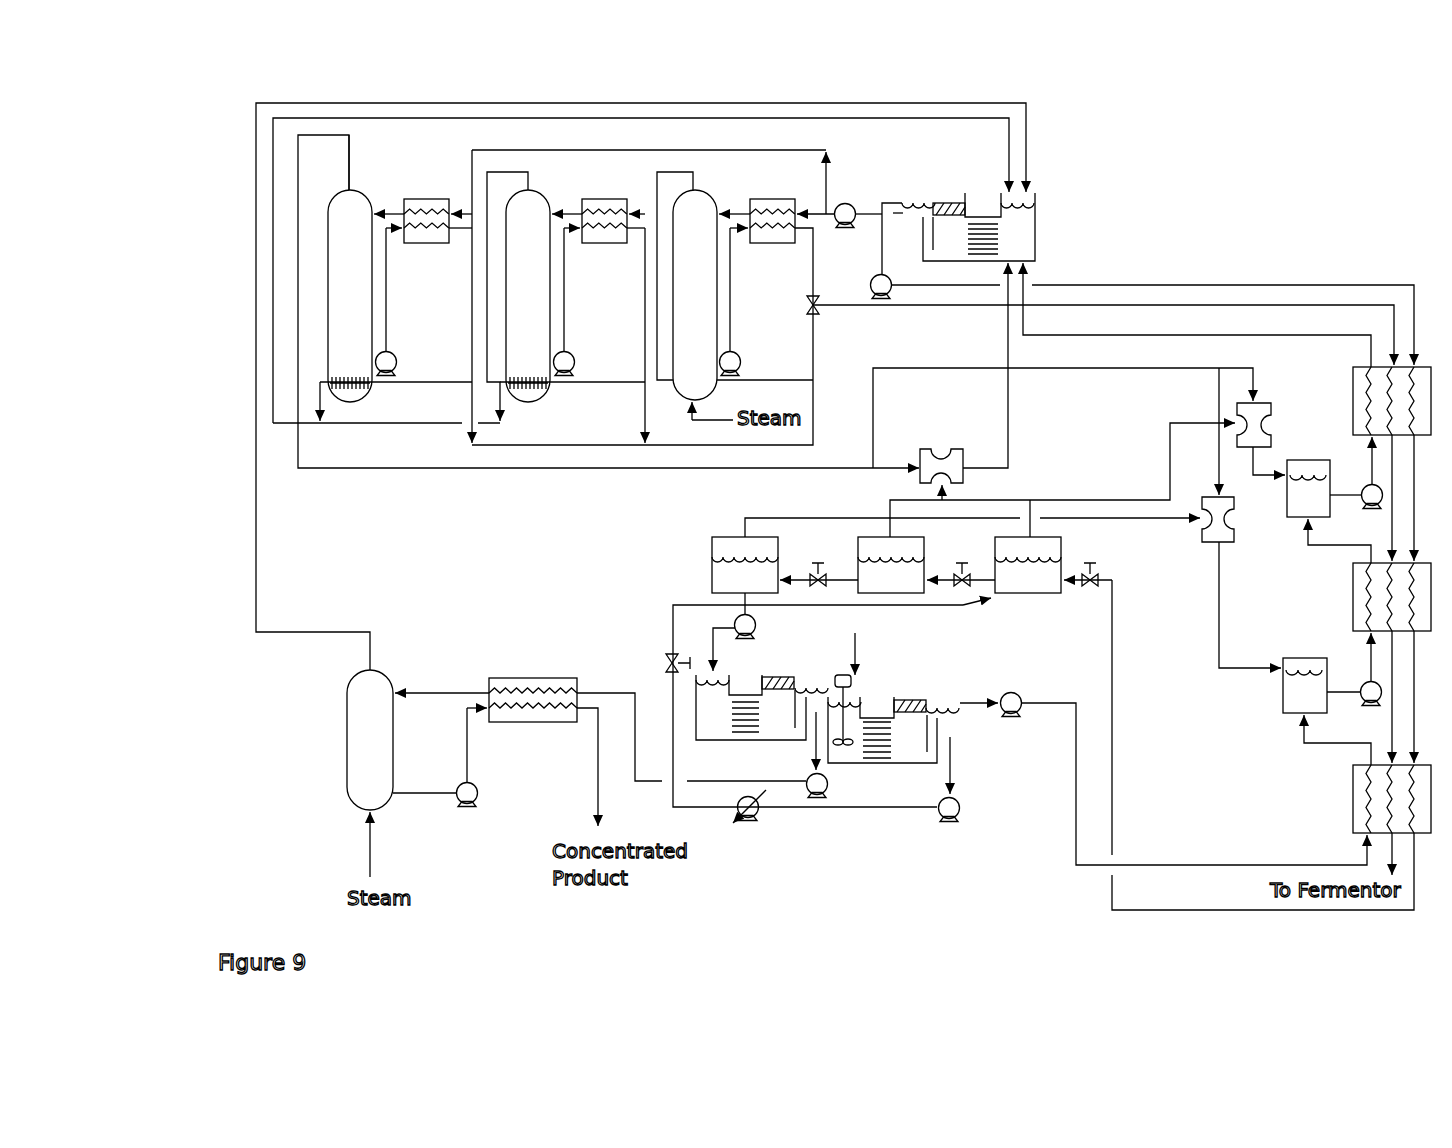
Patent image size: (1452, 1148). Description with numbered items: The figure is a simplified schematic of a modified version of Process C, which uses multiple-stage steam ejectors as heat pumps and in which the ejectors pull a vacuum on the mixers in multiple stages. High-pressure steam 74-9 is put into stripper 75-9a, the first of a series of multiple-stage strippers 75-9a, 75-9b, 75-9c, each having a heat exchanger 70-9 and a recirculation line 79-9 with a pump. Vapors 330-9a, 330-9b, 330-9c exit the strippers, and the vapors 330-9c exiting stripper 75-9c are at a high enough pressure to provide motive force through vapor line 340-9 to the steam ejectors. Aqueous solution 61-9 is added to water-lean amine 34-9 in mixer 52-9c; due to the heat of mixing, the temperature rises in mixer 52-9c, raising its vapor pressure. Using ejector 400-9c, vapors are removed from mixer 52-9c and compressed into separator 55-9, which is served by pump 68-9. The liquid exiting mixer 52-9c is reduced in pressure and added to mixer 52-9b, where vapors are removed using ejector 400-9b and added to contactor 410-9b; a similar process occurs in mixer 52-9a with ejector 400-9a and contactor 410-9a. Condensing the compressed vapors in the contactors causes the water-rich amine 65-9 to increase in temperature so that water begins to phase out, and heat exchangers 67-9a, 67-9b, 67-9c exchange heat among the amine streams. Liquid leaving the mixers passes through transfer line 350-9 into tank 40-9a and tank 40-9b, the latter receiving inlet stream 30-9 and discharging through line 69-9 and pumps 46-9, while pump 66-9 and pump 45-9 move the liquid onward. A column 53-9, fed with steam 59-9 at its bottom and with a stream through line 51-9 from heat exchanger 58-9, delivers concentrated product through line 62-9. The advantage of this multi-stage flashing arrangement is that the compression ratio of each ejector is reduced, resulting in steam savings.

The vapors 330-9c is at (349, 188).
The vapors 330-9b is at (528, 188).
The vapors 330-9a is at (693, 188).
The stripper 75-9c is at (350, 296).
The stripper 75-9b is at (528, 296).
The stripper 75-9a is at (695, 295).
The heat exchanger 70-9 is at (406, 245).
The recirculation line 79-9 is at (386, 330).
The high-pressure steam 74-9 is at (722, 418).
The pump 68-9 is at (858, 204).
The separator 55-9 is at (1037, 200).
The water-lean amine 34-9 is at (882, 240).
The vapor line 340-9 is at (366, 425).
The ejector 400-9c is at (958, 448).
The ejector 400-9b is at (1313, 430).
The ejector 400-9a is at (1202, 535).
The contactor 410-9b is at (1287, 503).
The contactor 410-9a is at (1283, 688).
The heat exchanger 67-9a is at (1353, 402).
The heat exchanger 67-9b is at (1353, 618).
The heat exchanger 67-9c is at (1350, 770).
The mixer 52-9a is at (785, 588).
The mixer 52-9b is at (926, 565).
The mixer 52-9c is at (1053, 546).
The liquid transfer line 350-9 is at (717, 657).
The aqueous solution 61-9 is at (672, 632).
The tank 40-9a is at (718, 742).
The tank 40-9b is at (838, 765).
The inlet stream 30-9 is at (855, 645).
The water-rich amine 65-9 is at (982, 700).
The pump 66-9 is at (1000, 718).
The line 69-9 is at (950, 745).
The pump 46-9 is at (817, 800).
The pump 45-9 is at (748, 822).
The column 53-9 is at (347, 793).
The heat exchanger 58-9 is at (503, 722).
The line 51-9 is at (620, 690).
The concentrated product line 62-9 is at (598, 755).
The steam line 59-9 is at (370, 862).